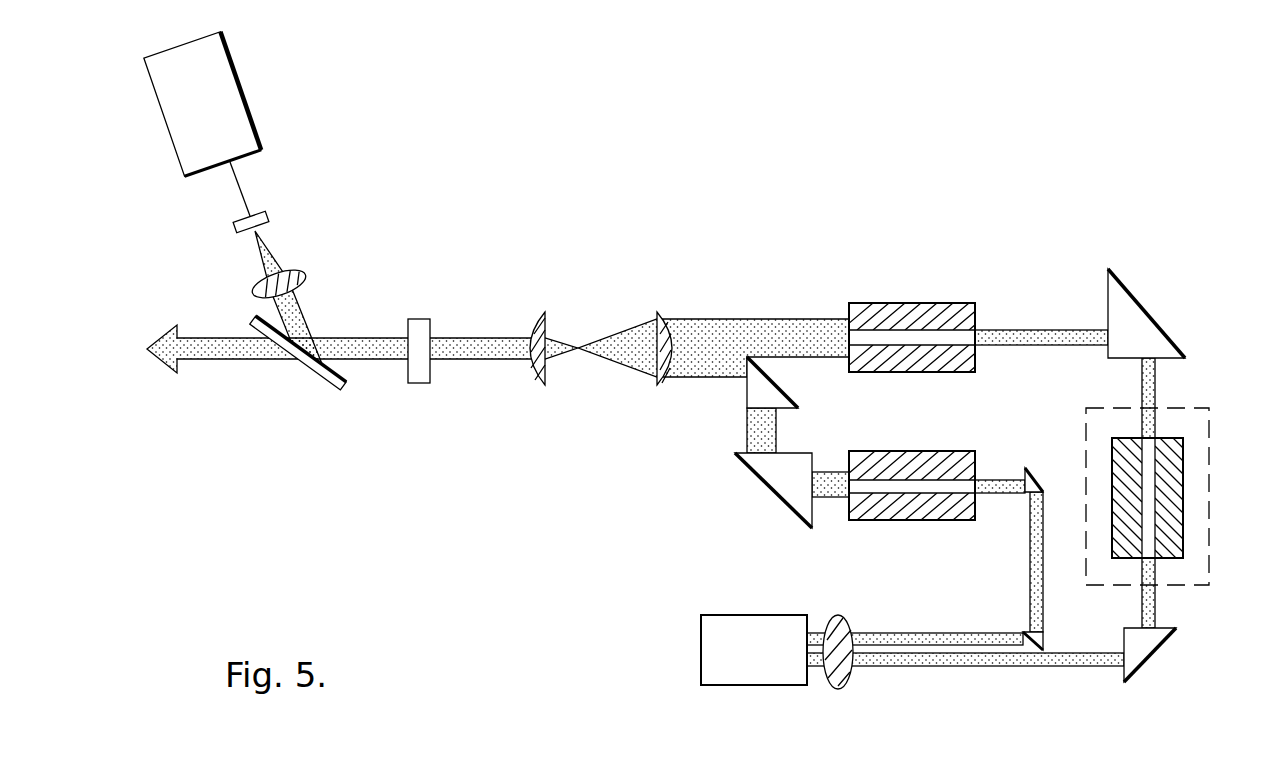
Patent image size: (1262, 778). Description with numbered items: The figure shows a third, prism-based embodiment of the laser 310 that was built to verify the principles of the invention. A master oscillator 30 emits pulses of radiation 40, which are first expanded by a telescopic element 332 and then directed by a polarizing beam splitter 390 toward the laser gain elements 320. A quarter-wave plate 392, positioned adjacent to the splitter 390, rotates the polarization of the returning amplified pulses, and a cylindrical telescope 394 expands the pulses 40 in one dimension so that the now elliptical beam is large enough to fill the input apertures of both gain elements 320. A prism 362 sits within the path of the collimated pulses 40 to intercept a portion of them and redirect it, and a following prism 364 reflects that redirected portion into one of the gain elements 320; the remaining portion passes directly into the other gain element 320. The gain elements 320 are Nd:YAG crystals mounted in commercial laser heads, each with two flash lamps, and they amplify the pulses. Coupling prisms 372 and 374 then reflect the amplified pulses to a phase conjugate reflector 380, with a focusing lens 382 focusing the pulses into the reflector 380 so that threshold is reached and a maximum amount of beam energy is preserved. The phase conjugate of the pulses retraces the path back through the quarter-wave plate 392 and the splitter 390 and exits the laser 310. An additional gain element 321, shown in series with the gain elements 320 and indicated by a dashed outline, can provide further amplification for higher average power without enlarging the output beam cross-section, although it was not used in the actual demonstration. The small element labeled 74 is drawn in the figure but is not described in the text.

The master oscillator 30 is at (232, 56).
The pulses of radiation 40 is at (313, 322).
The mirror 74 is at (1022, 632).
The laser 310 is at (715, 183).
The laser gain elements 320 is at (867, 303).
The additional gain element 321 is at (1168, 438).
The telescopic element 332 is at (309, 190).
The prism 362 is at (745, 393).
The prism 364 is at (773, 495).
The coupling prism 372 is at (1142, 300).
The coupling prism 374 is at (1148, 655).
The phase conjugate reflector 380 is at (715, 686).
The focusing lens 382 is at (842, 688).
The polarizing beam splitter 390 is at (335, 388).
The quarter-wave plate 392 is at (415, 384).
The cylindrical telescope 394 is at (530, 297).